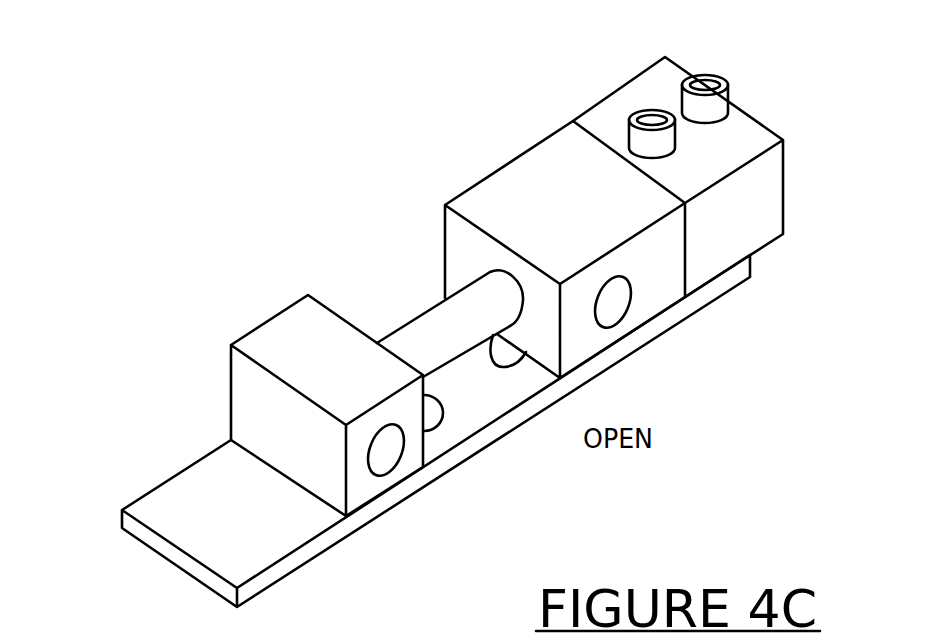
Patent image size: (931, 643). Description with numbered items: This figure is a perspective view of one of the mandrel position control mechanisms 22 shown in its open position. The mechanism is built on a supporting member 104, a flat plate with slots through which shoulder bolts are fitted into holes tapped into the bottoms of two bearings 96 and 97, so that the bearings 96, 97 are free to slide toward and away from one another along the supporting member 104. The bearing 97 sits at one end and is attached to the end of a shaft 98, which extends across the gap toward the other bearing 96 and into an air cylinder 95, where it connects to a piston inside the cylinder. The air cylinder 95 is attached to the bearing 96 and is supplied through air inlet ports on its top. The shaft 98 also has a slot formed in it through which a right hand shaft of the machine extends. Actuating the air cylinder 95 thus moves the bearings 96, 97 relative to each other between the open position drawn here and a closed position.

The mandrel position control mechanism 22 is at (843, 183).
The air cylinder 95 is at (750, 110).
The bearing 96 is at (527, 155).
The bearing 97 is at (270, 315).
The shaft 98 is at (445, 255).
The supporting member 104 is at (185, 462).